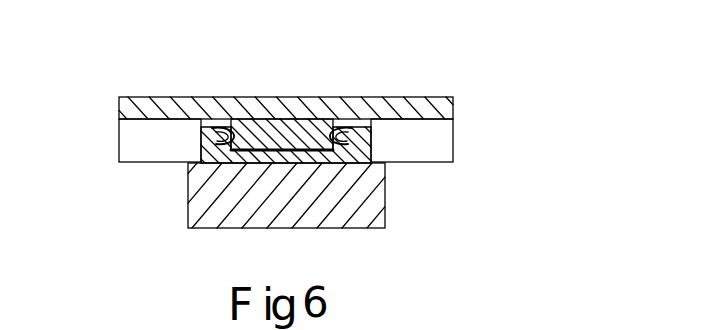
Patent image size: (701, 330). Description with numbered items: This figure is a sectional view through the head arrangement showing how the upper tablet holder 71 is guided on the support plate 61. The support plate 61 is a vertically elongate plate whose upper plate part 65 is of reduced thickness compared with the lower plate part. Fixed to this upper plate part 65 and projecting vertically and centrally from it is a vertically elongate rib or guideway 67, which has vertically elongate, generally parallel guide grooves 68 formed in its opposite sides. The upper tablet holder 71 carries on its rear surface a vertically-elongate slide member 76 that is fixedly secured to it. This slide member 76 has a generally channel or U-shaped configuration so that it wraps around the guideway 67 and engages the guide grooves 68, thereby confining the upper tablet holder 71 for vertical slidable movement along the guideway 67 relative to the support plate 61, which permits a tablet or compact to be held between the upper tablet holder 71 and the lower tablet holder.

The support plate 61 is at (153, 90).
The upper plate part 65 is at (415, 108).
The guideway 67 is at (292, 132).
The guide grooves 68 is at (209, 120).
The upper tablet holder 71 is at (367, 208).
The slide member 76 is at (337, 129).